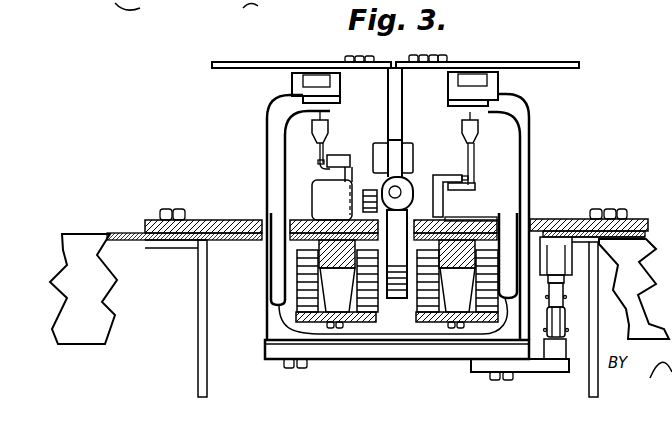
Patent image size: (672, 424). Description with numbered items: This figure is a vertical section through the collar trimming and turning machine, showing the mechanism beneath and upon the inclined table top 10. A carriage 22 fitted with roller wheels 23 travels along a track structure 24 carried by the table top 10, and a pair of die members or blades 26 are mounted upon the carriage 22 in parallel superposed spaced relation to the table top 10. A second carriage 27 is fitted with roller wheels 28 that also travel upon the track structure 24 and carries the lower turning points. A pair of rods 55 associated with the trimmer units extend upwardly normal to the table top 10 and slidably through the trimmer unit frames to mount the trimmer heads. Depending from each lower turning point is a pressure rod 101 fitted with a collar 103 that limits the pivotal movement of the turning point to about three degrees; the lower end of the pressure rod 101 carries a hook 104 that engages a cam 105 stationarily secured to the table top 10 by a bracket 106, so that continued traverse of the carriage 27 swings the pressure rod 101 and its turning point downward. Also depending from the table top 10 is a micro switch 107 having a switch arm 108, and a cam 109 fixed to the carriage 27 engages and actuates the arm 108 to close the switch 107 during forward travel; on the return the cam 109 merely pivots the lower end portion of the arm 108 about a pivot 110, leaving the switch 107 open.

The table top 10 is at (145, 222).
The carriage 22 is at (406, 134).
The roller wheels 23 is at (415, 309).
The track structure 24 is at (305, 220).
The die members or blades 26 is at (232, 62).
The second carriage 27 is at (277, 161).
The roller wheels 28 is at (303, 265).
The rods 55 is at (262, 3).
The pressure rod 101 is at (321, 157).
The collar 103 is at (330, 126).
The hook 104 is at (327, 177).
The cam 105 is at (332, 152).
The bracket 106 is at (363, 165).
The micro switch 107 is at (557, 253).
The switch arm 108 is at (563, 315).
The cam 109 is at (556, 352).
The pivot 110 is at (567, 297).